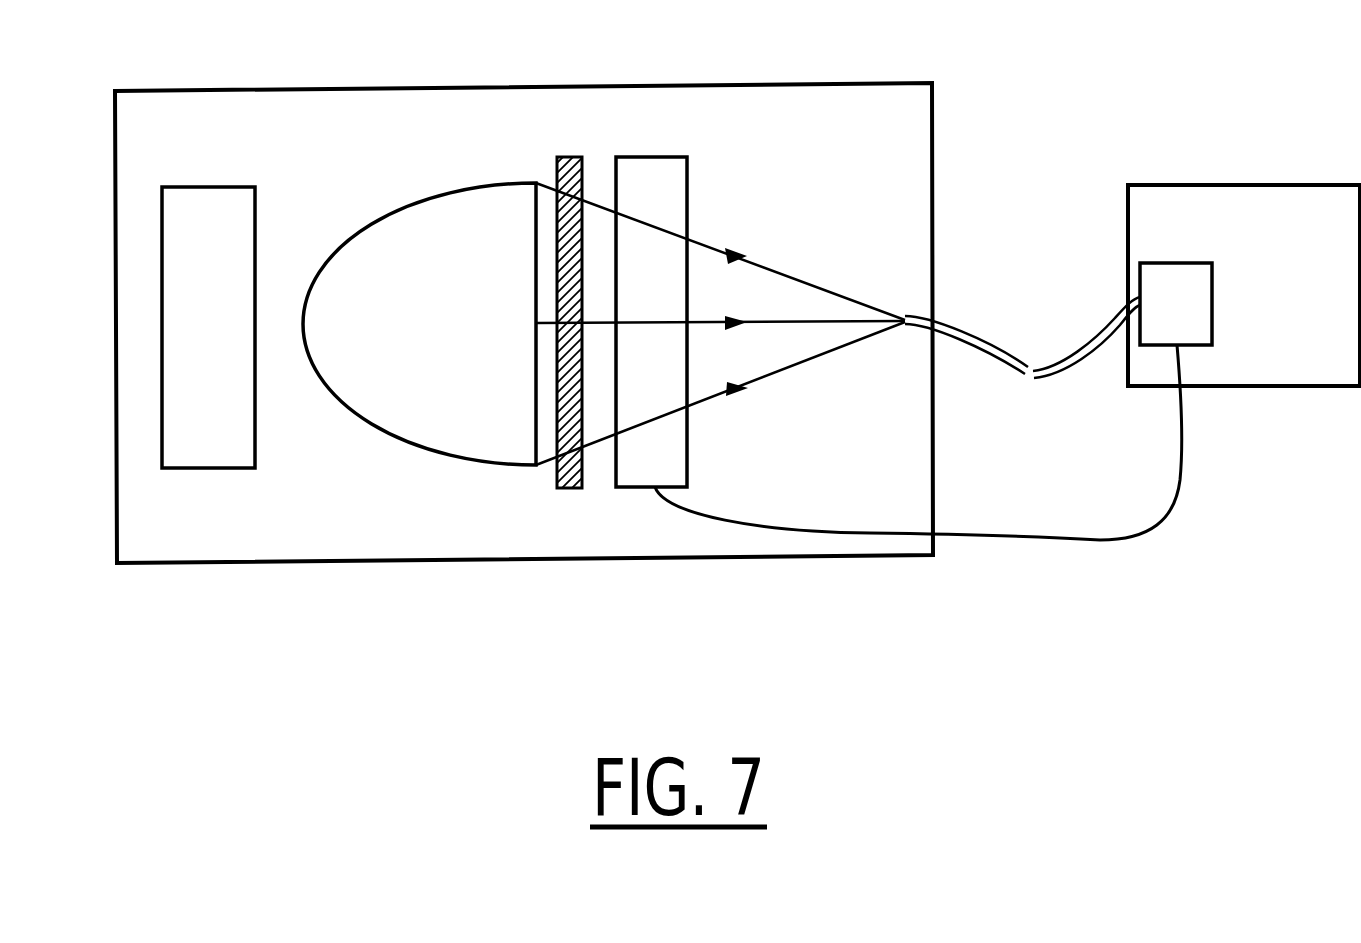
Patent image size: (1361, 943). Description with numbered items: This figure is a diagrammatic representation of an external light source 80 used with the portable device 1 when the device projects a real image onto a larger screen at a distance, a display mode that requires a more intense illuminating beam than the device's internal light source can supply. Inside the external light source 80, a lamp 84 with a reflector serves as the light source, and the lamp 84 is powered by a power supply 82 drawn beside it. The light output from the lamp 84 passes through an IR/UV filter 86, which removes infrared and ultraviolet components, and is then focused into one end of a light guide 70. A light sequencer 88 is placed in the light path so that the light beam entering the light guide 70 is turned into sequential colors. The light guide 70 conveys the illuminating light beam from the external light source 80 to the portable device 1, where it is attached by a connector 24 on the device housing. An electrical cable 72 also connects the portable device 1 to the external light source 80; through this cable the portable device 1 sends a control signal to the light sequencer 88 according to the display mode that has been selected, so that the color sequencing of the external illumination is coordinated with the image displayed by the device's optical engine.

The portable device 1 is at (1245, 185).
The connector 24 is at (1212, 305).
The light guide 70 is at (967, 328).
The electrical cable 72 is at (1015, 530).
The external light source 80 is at (217, 89).
The power supply 82 is at (160, 322).
The lamp 84 is at (485, 203).
The IR/UV filter 86 is at (570, 157).
The light sequencer 88 is at (650, 157).